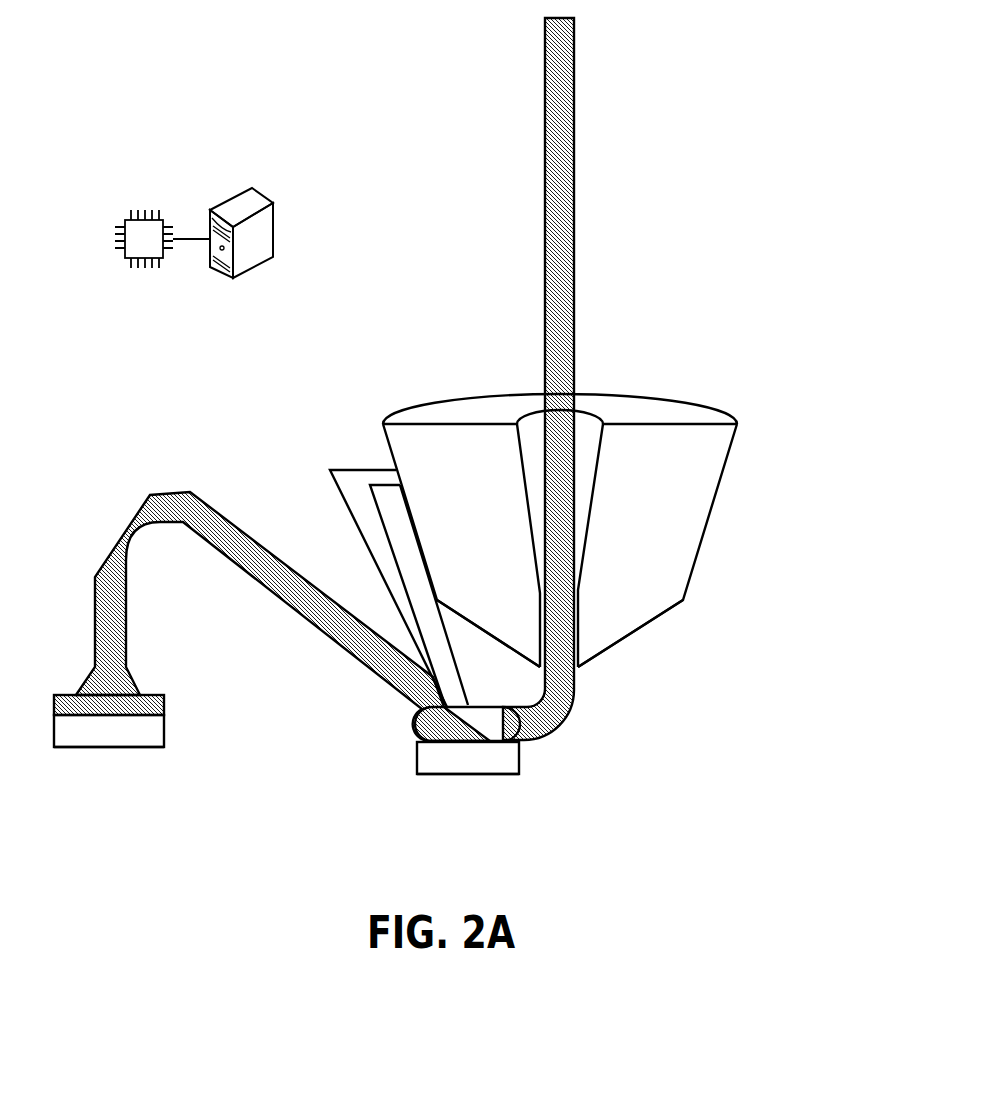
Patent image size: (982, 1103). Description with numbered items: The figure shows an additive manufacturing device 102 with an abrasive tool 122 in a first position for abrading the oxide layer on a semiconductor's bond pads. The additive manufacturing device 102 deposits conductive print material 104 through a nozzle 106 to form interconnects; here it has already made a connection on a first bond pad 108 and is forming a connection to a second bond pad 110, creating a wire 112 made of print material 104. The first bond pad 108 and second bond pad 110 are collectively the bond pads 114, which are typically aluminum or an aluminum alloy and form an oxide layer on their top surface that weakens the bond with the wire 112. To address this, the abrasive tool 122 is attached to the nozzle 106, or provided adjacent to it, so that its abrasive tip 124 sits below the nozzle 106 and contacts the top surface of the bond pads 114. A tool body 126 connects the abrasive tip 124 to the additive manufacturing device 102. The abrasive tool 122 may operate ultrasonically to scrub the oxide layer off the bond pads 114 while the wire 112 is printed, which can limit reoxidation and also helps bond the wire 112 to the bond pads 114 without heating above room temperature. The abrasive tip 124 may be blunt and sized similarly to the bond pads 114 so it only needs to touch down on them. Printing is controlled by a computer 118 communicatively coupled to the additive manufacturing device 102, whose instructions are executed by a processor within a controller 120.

The additive manufacturing device 102 is at (752, 545).
The print material 104 is at (573, 310).
The nozzle 106 is at (629, 635).
The first bond pad 108 is at (87, 733).
The second bond pad 110 is at (487, 762).
The wire 112 is at (210, 508).
The bond pads 114 is at (153, 748).
The computer 118 is at (283, 218).
The controller 120 is at (162, 212).
The abrasive tool 122 is at (348, 508).
The abrasive tip 124 is at (414, 726).
The tool body 126 is at (397, 615).